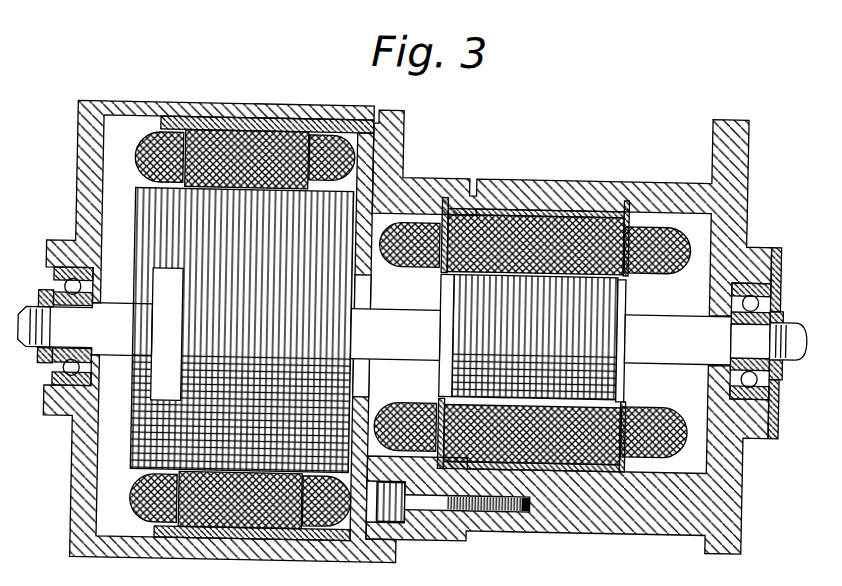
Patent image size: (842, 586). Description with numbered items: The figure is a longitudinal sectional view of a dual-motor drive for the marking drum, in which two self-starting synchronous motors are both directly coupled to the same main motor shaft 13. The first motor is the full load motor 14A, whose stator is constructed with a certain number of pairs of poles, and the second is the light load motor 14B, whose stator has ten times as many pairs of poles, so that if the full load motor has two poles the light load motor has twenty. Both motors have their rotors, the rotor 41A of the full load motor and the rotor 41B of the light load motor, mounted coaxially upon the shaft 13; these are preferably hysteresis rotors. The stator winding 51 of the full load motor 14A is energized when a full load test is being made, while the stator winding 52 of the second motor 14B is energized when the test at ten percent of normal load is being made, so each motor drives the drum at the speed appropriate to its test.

The main motor shaft 13 is at (412, 334).
The full load motor 14A is at (558, 209).
The light load motor 14B is at (243, 186).
The rotor of motor 14A 41A is at (532, 338).
The rotor of motor 14B 41B is at (241, 330).
The stator winding of motor 14A 51 is at (565, 452).
The stator winding of motor 14B 52 is at (267, 523).